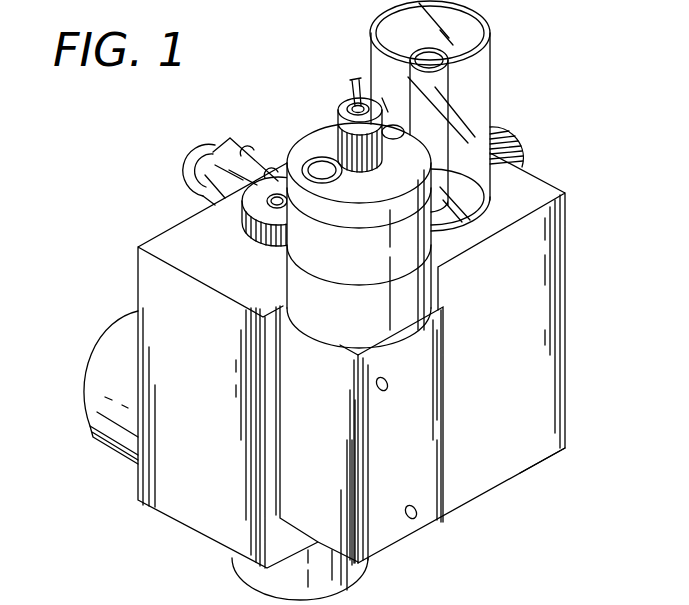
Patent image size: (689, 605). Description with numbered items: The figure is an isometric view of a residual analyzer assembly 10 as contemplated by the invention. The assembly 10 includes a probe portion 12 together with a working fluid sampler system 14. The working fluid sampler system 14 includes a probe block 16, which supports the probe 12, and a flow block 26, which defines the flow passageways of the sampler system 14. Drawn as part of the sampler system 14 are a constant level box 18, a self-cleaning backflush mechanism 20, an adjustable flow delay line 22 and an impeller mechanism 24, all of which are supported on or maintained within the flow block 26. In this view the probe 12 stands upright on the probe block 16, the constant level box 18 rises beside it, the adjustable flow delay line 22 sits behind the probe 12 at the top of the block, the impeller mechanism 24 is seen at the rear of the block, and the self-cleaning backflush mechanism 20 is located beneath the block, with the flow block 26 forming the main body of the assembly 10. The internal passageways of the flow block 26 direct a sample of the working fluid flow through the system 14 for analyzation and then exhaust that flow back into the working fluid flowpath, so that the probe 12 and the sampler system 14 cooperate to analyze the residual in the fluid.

The residual analyzer assembly 10 is at (113, 206).
The probe portion 12 is at (316, 134).
The working fluid sampler system 14 is at (584, 281).
The probe block 16 is at (398, 533).
The constant level box 18 is at (490, 80).
The self-cleaning backflush mechanism 20 is at (281, 587).
The adjustable flow delay line 22 is at (203, 158).
The impeller mechanism 24 is at (95, 430).
The flow block 26 is at (532, 452).